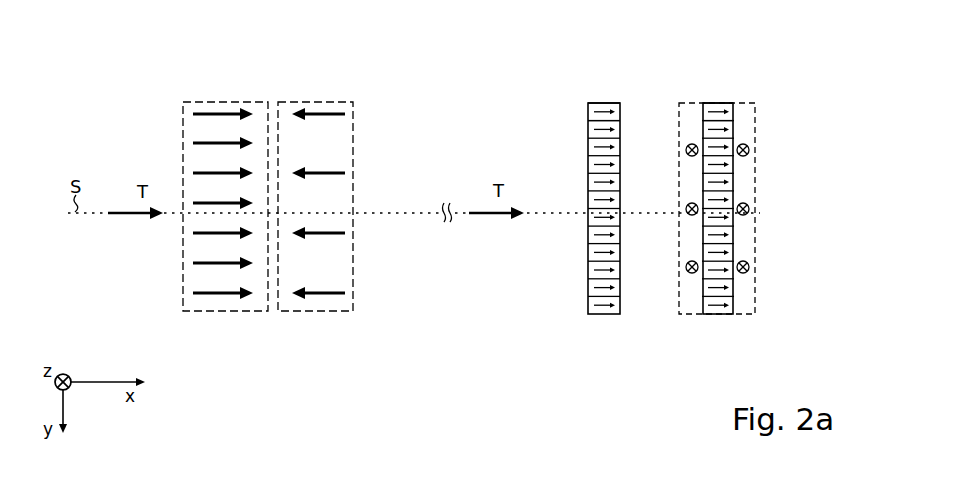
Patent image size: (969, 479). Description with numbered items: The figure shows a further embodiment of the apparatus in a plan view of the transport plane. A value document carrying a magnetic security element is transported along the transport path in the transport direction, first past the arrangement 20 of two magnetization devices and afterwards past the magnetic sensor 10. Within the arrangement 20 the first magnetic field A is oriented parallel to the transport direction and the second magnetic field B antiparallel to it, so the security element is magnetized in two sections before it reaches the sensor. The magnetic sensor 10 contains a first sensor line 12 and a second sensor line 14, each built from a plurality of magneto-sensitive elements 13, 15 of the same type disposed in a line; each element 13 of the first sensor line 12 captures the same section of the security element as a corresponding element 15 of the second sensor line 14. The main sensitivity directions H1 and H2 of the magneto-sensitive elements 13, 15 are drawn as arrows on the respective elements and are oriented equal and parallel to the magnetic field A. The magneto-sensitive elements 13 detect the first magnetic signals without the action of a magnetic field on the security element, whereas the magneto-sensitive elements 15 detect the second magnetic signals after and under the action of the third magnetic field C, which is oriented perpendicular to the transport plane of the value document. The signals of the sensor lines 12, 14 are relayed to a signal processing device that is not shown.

The magnetic sensor 10 is at (675, 228).
The first sensor line 12 is at (604, 222).
The magneto-sensitive elements 13 is at (598, 104).
The second sensor line 14 is at (718, 222).
The magneto-sensitive elements 15 is at (709, 104).
The arrangement of magnetization devices 20 is at (350, 333).
The main sensitivity direction H1 is at (602, 108).
The main sensitivity direction H2 is at (714, 108).
The third magnetic field C is at (726, 220).